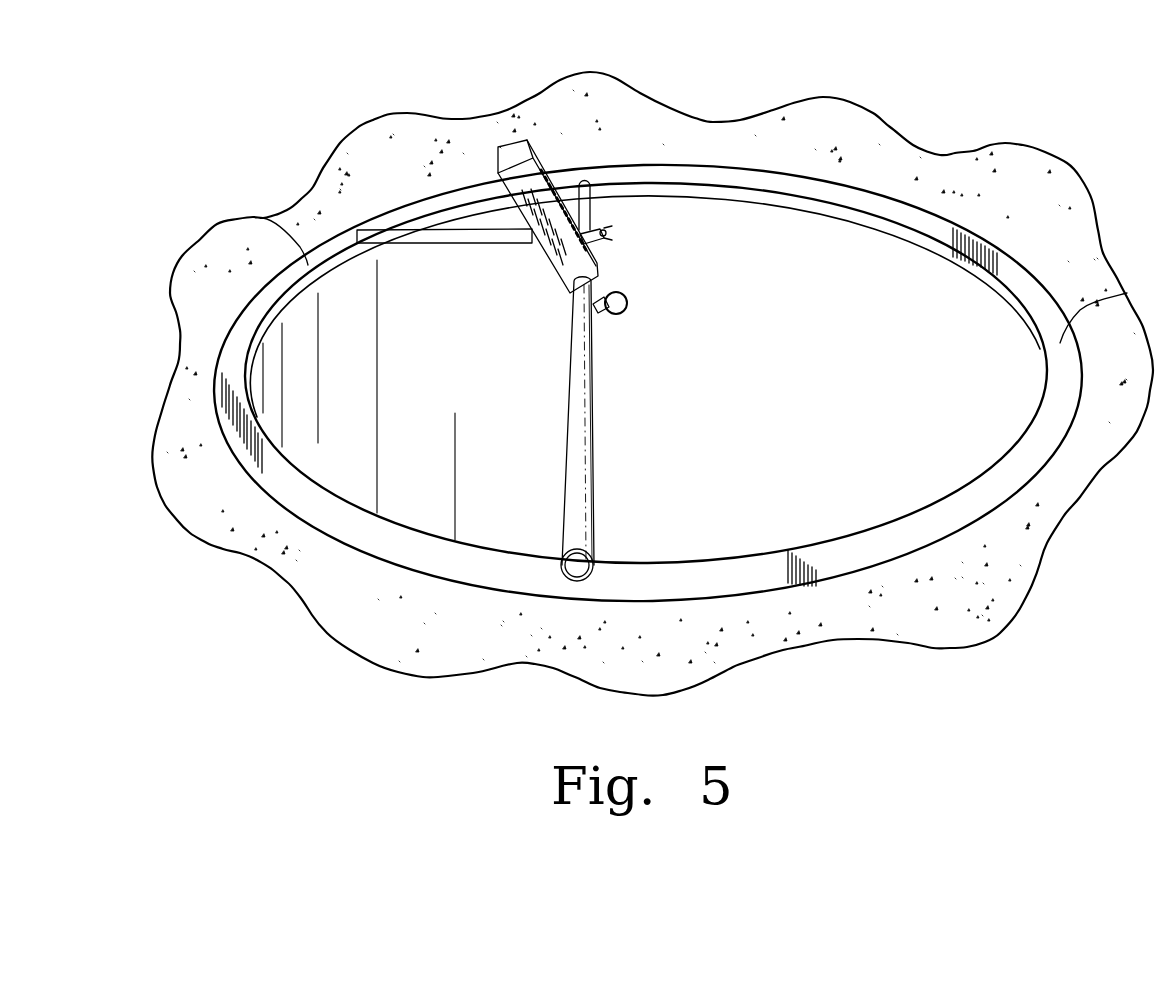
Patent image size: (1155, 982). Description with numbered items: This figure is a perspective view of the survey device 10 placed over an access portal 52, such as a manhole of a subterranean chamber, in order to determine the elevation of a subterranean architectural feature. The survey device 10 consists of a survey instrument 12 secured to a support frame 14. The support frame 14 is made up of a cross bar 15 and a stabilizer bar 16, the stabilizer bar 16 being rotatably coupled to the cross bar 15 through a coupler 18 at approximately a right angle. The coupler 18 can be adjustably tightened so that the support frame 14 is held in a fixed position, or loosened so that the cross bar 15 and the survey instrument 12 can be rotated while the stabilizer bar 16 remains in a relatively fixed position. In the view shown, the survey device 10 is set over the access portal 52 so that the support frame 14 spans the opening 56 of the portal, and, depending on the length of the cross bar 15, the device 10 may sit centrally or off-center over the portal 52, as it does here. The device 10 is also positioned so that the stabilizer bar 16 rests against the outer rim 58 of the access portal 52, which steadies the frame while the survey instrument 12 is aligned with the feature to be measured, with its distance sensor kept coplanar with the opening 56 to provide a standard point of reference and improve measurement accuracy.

The survey device 10 is at (564, 360).
The survey instrument 12 is at (540, 262).
The support frame 14 is at (623, 392).
The cross bar 15 is at (578, 538).
The stabilizer bar 16 is at (440, 240).
The coupler 18 is at (593, 220).
The access portal 52 is at (955, 134).
The opening 56 is at (366, 498).
The outer rim 58 is at (265, 217).